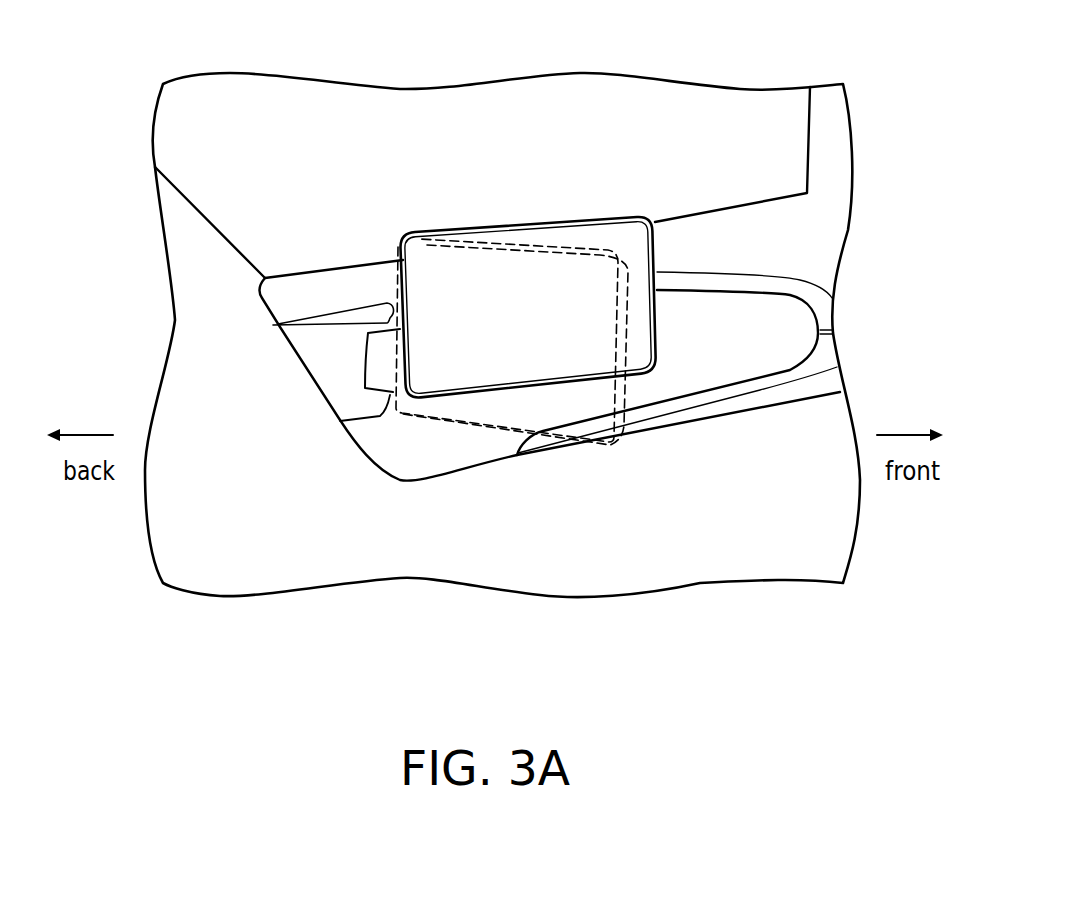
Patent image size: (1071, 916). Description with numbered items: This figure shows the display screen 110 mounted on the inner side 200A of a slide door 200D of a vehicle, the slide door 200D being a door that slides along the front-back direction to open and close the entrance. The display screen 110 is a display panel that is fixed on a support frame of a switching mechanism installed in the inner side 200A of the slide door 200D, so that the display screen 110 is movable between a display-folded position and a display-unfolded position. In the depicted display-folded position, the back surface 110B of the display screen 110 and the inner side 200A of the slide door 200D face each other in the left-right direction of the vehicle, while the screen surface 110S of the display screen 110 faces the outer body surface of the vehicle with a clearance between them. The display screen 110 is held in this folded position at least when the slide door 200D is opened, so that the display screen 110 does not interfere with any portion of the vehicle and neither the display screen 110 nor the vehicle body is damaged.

The display screen 110 is at (561, 338).
The screen surface 110S is at (615, 243).
The back surface 110B is at (652, 244).
The slide door 200D is at (797, 225).
The inner side 200A is at (776, 258).